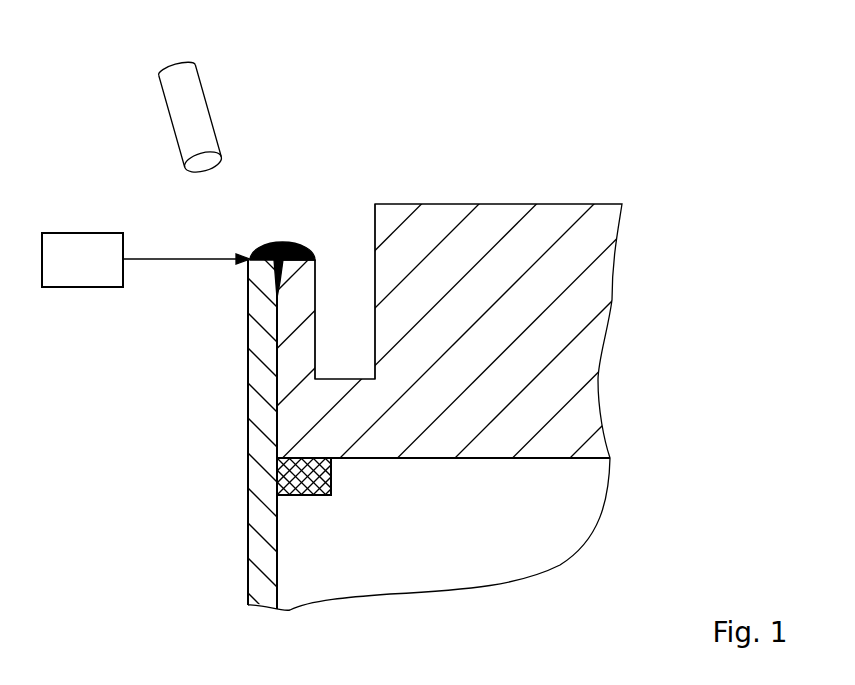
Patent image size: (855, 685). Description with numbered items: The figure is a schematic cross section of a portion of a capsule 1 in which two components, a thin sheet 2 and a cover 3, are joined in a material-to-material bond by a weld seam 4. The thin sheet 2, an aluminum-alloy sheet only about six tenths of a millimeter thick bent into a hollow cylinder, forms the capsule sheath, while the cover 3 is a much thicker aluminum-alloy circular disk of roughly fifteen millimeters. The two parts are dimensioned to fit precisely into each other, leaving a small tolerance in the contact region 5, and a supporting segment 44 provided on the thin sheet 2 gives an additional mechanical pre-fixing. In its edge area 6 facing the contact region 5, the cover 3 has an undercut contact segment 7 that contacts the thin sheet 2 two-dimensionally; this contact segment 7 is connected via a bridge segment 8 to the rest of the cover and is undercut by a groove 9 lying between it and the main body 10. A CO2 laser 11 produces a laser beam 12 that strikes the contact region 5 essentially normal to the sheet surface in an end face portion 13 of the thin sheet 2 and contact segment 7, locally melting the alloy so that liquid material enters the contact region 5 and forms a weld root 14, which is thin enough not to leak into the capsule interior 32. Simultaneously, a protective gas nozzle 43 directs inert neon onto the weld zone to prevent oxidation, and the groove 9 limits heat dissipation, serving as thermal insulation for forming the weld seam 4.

The capsule 1 is at (590, 163).
The thin sheet 2 is at (255, 372).
The cover 3 is at (600, 295).
The weld seam 4 is at (257, 243).
The contact region 5 is at (265, 432).
The edge area 6 is at (348, 202).
The contact segment 7 is at (305, 305).
The bridge segment 8 is at (353, 432).
The groove 9 is at (333, 357).
The main body 10 is at (543, 466).
The CO2 laser 11 is at (67, 272).
The laser beam 12 is at (185, 258).
The end face portion 13 is at (297, 212).
The weld root 14 is at (277, 270).
The capsule interior 32 is at (469, 552).
The protective gas nozzle 43 is at (193, 93).
The supporting segment 44 is at (330, 492).